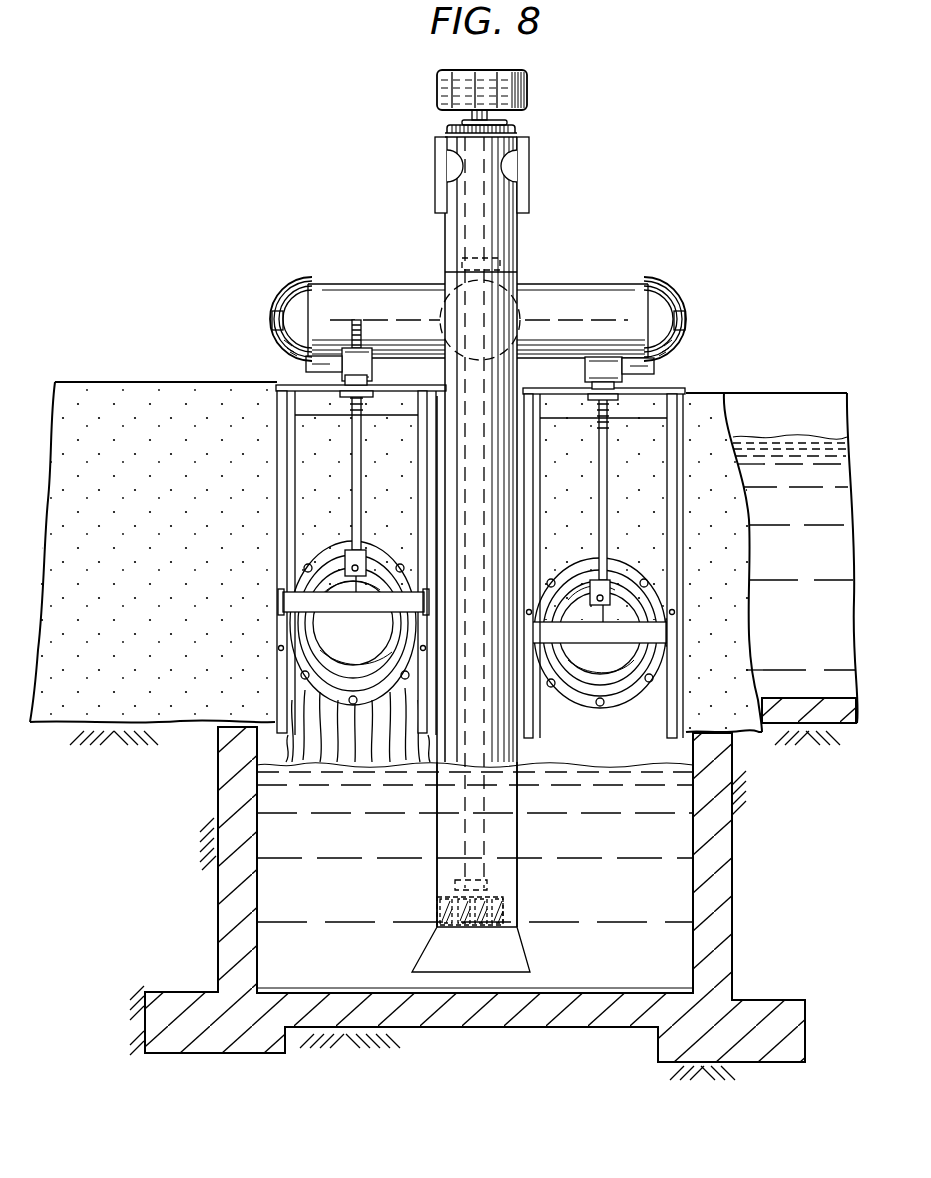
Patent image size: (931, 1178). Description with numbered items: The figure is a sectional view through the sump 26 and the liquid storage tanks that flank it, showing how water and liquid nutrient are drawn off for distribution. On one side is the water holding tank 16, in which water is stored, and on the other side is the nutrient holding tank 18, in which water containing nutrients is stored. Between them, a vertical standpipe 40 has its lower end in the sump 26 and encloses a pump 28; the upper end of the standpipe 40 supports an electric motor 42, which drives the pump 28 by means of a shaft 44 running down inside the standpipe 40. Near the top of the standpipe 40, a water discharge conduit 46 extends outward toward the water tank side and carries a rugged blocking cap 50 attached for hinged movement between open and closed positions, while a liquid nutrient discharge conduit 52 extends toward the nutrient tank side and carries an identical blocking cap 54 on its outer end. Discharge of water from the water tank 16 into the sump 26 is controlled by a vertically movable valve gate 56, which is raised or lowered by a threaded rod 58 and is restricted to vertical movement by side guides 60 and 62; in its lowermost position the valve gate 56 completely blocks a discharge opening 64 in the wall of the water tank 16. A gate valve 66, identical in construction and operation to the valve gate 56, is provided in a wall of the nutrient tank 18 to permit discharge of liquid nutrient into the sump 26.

The water holding tank 16 is at (140, 400).
The nutrient holding tank 18 is at (790, 405).
The sump 26 is at (594, 992).
The pump 28 is at (505, 912).
The vertical standpipe 40 is at (515, 836).
The electric motor 42 is at (520, 128).
The shaft 44 is at (490, 234).
The water discharge conduit 46 is at (360, 298).
The blocking cap 50 is at (292, 292).
The liquid nutrient discharge conduit 52 is at (575, 290).
The blocking cap 54 is at (660, 292).
The valve gate 56 is at (378, 564).
The threaded rod 58 is at (355, 424).
The side guide 60 is at (288, 514).
The side guide 62 is at (426, 496).
The discharge opening 64 is at (290, 655).
The gate valve 66 is at (620, 585).